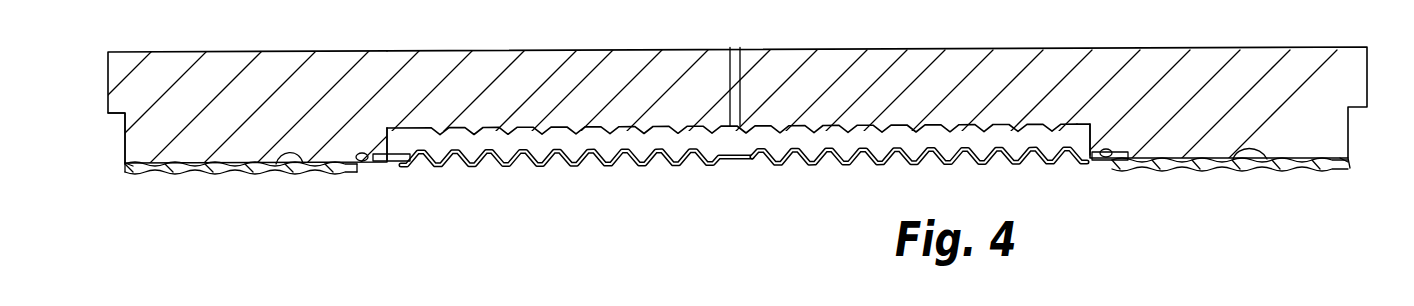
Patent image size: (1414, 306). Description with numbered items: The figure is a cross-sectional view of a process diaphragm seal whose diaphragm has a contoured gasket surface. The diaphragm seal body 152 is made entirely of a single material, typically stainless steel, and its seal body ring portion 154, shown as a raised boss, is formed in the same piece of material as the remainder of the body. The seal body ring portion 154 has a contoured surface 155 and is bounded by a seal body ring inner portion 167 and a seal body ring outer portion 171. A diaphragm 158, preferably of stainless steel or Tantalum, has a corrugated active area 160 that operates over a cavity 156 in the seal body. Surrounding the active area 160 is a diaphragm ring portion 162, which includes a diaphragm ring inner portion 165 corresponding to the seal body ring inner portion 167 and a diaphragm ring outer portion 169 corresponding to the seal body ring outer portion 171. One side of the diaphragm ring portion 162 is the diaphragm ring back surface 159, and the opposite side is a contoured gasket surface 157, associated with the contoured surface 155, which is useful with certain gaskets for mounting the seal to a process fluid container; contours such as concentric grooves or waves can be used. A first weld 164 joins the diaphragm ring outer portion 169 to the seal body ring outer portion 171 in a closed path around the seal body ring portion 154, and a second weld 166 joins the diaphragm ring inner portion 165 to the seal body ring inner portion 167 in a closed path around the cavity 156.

The diaphragm seal body 152 is at (617, 68).
The seal body ring portion 154 is at (257, 140).
The contoured surface 155 is at (1237, 149).
The cavity 156 is at (750, 143).
The contoured gasket surface 157 is at (1350, 160).
The diaphragm 158 is at (637, 166).
The diaphragm ring back surface 159 is at (300, 168).
The active area 160 is at (857, 155).
The diaphragm ring portion 162 is at (213, 172).
The first weld 164 is at (125, 163).
The diaphragm ring inner portion 165 is at (373, 161).
The second weld 166 is at (362, 157).
The seal body ring inner portion 167 is at (383, 142).
The diaphragm ring outer portion 169 is at (130, 172).
The seal body ring outer portion 171 is at (138, 137).